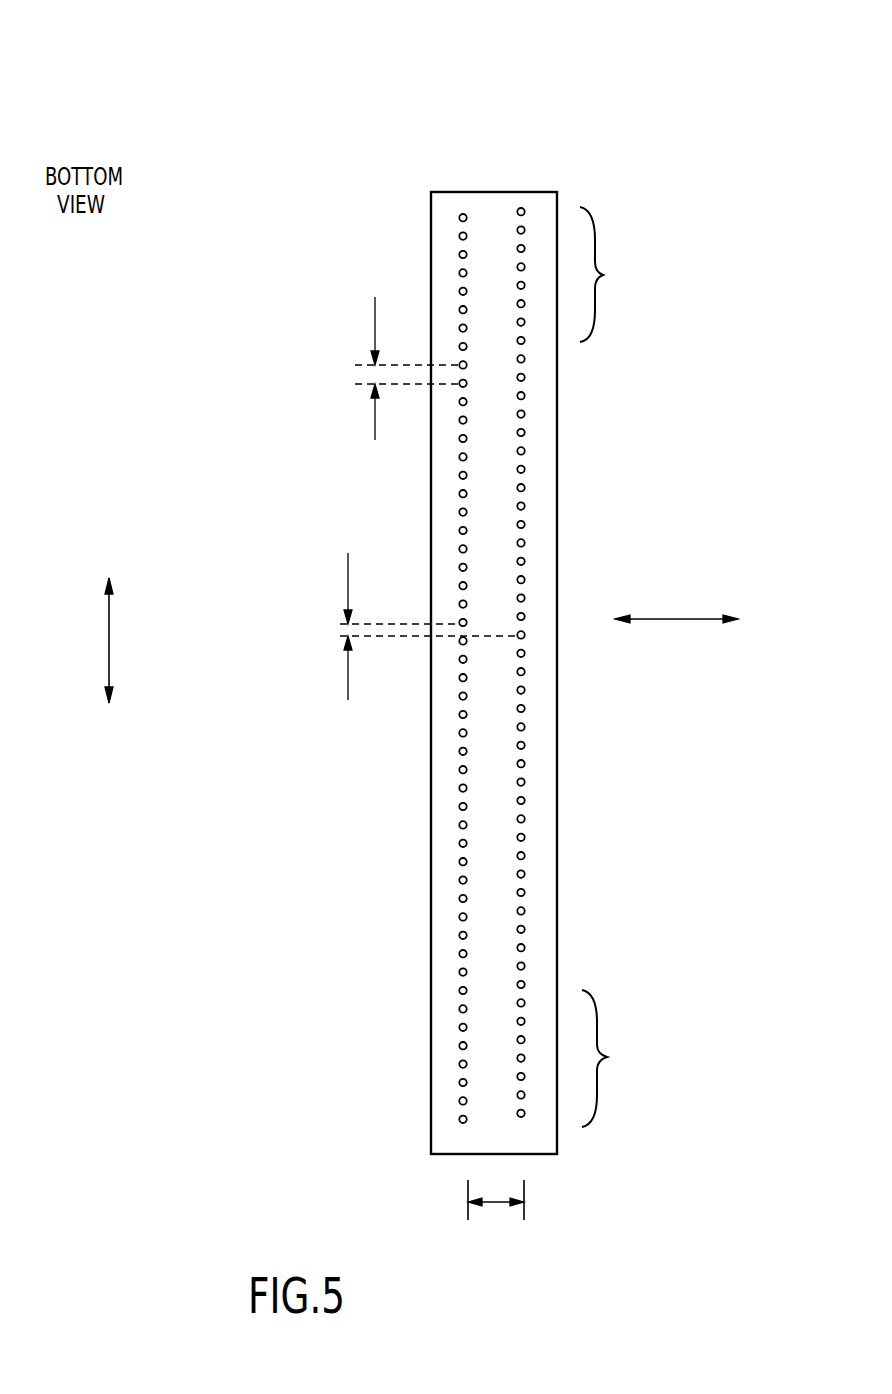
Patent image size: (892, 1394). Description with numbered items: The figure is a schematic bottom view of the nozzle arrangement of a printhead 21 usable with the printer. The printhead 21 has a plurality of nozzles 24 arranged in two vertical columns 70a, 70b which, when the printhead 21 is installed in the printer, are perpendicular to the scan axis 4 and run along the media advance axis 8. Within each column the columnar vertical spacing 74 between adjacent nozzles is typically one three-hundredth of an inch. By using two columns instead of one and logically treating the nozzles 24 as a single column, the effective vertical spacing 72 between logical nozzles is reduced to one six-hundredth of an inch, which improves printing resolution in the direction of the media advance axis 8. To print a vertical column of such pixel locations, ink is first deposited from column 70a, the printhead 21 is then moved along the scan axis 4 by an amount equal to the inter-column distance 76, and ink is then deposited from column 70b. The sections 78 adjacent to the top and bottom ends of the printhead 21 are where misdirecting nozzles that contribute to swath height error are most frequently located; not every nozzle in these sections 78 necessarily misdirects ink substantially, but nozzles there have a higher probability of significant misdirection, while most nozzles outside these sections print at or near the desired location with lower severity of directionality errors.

The printhead 21 is at (270, 94).
The first nozzle column 70a is at (404, 567).
The second nozzle column 70b is at (518, 171).
The nozzles 24 is at (459, 917).
The effective vertical spacing 72 is at (383, 624).
The columnar vertical spacing 74 is at (400, 365).
The inter-column distance 76 is at (497, 1202).
The sections adjacent to printhead ends 78 is at (613, 667).
The scan axis 4 is at (681, 619).
The media advance axis 8 is at (109, 632).